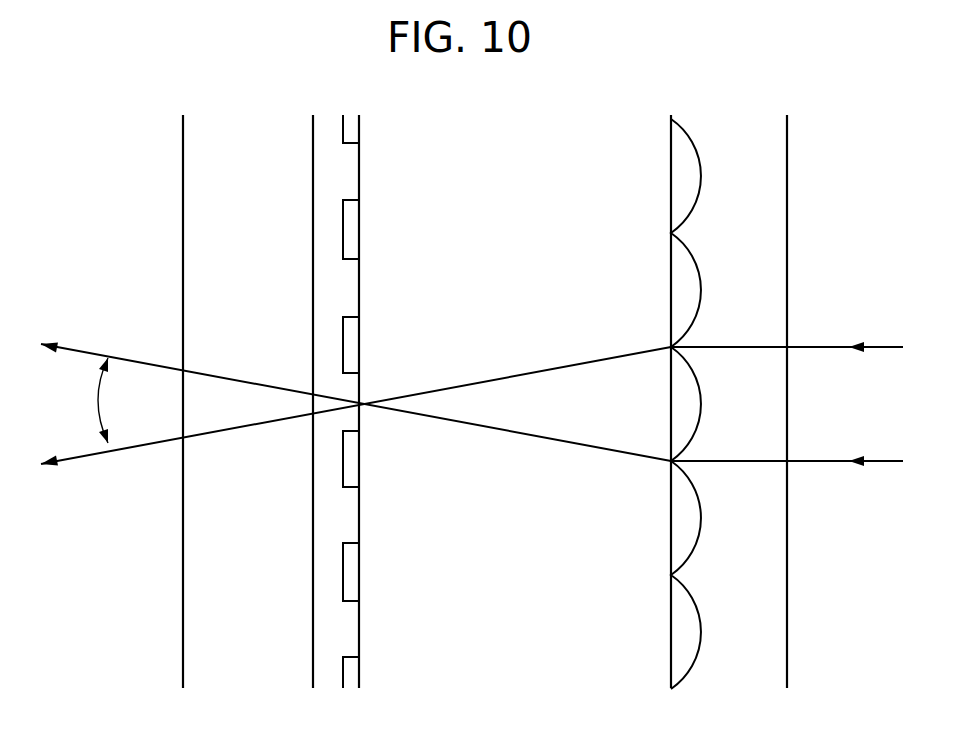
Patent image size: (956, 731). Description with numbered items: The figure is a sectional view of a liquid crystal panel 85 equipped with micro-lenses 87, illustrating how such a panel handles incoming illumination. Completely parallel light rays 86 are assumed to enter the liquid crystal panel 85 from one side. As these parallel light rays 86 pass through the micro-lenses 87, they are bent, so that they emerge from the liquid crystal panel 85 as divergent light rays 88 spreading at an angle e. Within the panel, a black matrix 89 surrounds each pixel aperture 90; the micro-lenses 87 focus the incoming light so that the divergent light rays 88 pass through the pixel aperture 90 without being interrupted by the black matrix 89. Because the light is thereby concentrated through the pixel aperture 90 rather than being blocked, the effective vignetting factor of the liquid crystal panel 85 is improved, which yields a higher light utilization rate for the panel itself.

The liquid crystal panel 85 is at (787, 175).
The parallel light rays 86 is at (827, 345).
The micro-lenses 87 is at (697, 265).
The divergent light rays 88 is at (140, 360).
The black matrix 89 is at (355, 352).
The pixel aperture 90 is at (360, 522).